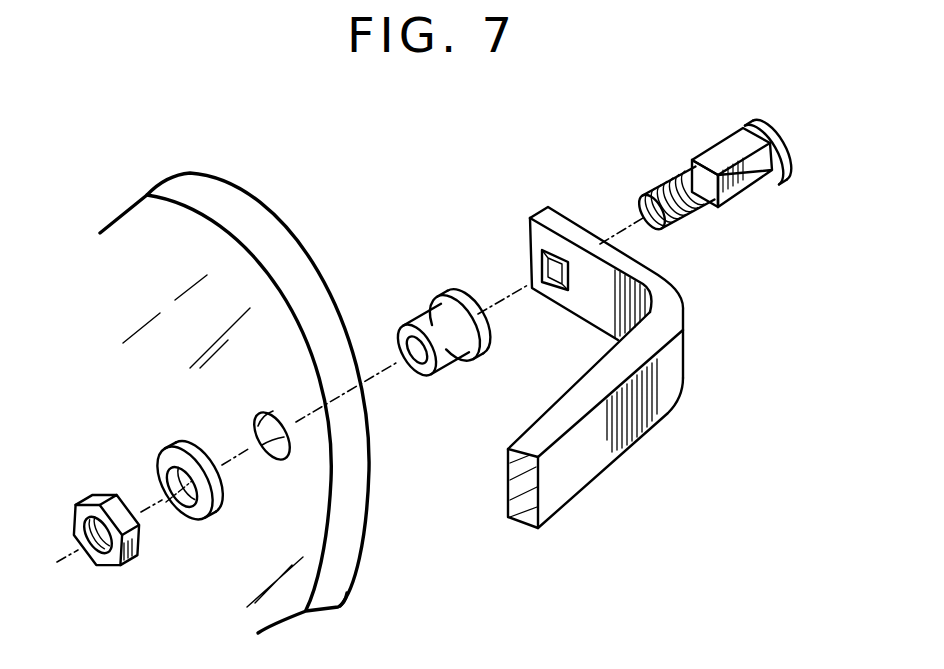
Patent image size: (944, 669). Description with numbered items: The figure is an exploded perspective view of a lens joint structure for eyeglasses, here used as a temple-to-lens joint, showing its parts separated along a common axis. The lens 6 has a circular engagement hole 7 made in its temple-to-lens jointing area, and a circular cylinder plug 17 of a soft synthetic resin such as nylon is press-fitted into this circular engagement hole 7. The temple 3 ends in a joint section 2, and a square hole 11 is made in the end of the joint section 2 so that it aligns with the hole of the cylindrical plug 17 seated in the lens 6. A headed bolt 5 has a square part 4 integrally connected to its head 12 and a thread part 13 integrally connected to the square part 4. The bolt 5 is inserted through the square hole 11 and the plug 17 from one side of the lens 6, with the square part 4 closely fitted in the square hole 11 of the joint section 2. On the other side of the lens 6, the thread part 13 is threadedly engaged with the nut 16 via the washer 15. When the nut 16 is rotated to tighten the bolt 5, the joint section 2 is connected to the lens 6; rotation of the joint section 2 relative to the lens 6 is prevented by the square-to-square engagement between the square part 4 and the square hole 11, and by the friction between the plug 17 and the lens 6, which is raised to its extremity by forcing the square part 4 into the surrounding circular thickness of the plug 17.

The joint section 2 is at (600, 315).
The temple 3 is at (592, 463).
The square part 4 is at (743, 187).
The headed bolt 5 is at (743, 175).
The lens 6 is at (347, 593).
The circular engagement hole 7 is at (278, 458).
The square hole 11 is at (557, 280).
The head 12 is at (793, 155).
The thread part 13 is at (690, 217).
The washer 15 is at (197, 518).
The nut 16 is at (123, 562).
The circular cylinder plug 17 is at (445, 365).